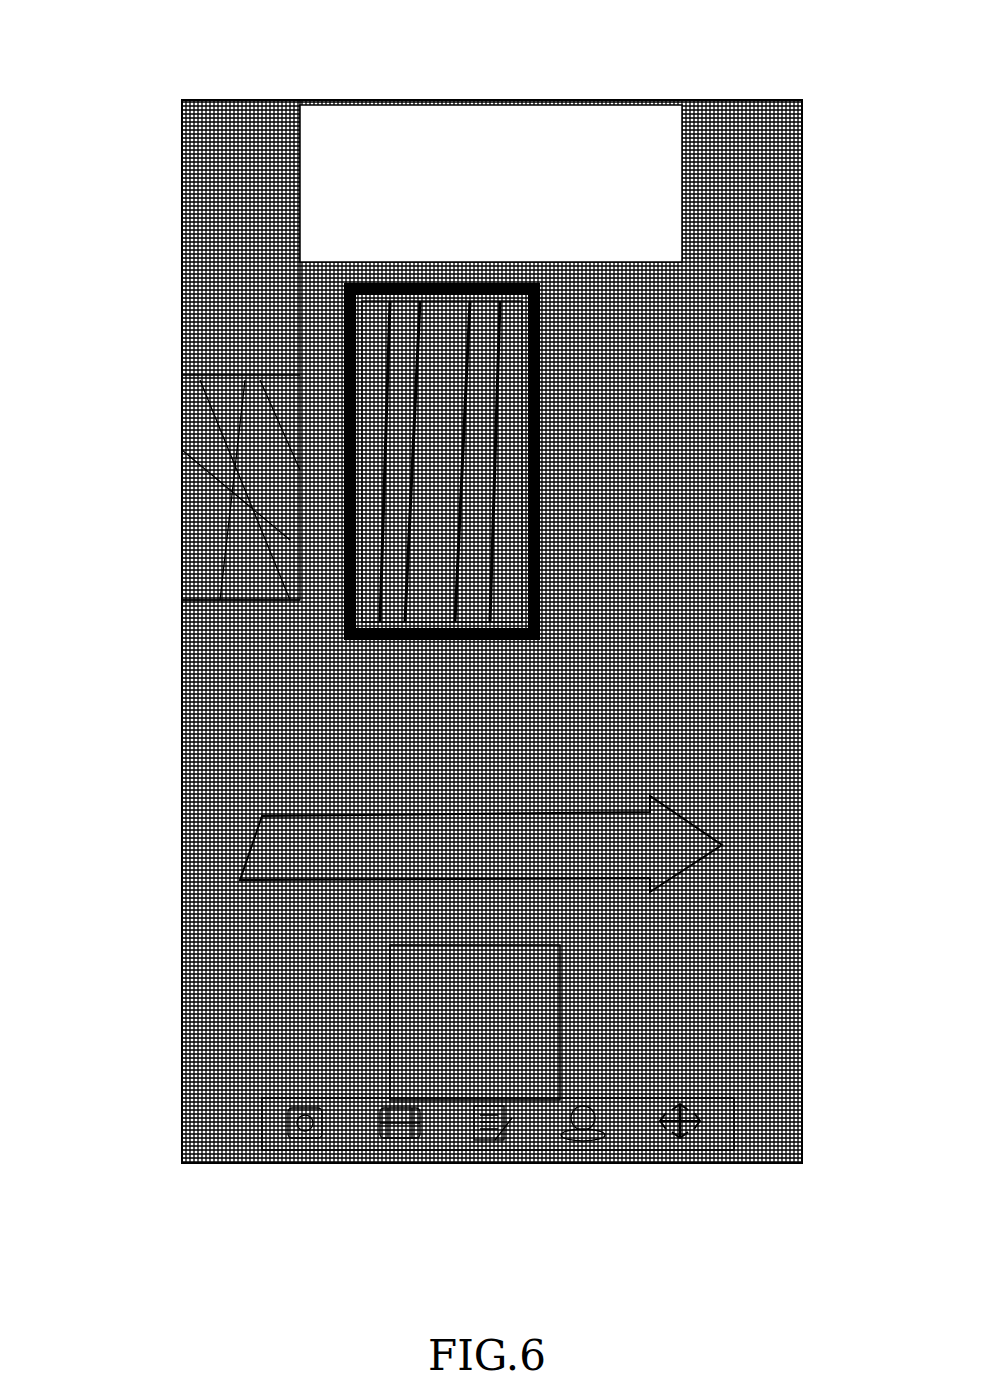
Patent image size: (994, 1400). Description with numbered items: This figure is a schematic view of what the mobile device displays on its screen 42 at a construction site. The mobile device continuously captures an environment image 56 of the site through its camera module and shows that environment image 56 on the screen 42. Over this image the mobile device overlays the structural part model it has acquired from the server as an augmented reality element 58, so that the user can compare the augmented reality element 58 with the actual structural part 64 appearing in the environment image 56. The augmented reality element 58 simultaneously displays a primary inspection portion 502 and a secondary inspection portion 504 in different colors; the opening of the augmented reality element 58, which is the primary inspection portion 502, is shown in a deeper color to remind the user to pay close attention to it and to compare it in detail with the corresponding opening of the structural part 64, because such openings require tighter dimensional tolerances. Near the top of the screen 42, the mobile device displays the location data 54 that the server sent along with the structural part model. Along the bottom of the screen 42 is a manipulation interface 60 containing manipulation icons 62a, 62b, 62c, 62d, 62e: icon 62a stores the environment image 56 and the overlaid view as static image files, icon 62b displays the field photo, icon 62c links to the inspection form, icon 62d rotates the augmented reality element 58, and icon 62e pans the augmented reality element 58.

The screen 42 is at (205, 100).
The location data 54 is at (645, 135).
The environment image 56 is at (210, 310).
The augmented reality element 58 is at (326, 576).
The primary inspection portion 502 is at (358, 615).
The secondary inspection portion 504 is at (358, 762).
The structural part 64 is at (393, 973).
The manipulation interface 60 is at (255, 1120).
The manipulation icon 62a is at (305, 1148).
The manipulation icon 62b is at (413, 1148).
The manipulation icon 62c is at (498, 1148).
The manipulation icon 62d is at (598, 1140).
The manipulation icon 62e is at (685, 1138).